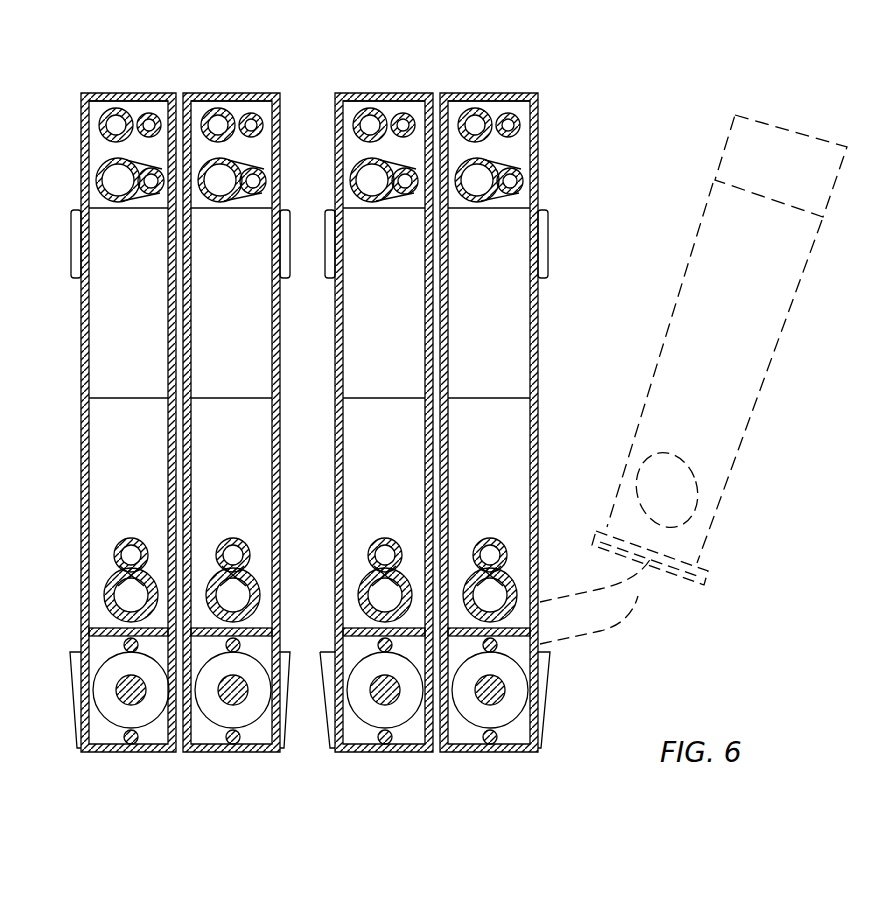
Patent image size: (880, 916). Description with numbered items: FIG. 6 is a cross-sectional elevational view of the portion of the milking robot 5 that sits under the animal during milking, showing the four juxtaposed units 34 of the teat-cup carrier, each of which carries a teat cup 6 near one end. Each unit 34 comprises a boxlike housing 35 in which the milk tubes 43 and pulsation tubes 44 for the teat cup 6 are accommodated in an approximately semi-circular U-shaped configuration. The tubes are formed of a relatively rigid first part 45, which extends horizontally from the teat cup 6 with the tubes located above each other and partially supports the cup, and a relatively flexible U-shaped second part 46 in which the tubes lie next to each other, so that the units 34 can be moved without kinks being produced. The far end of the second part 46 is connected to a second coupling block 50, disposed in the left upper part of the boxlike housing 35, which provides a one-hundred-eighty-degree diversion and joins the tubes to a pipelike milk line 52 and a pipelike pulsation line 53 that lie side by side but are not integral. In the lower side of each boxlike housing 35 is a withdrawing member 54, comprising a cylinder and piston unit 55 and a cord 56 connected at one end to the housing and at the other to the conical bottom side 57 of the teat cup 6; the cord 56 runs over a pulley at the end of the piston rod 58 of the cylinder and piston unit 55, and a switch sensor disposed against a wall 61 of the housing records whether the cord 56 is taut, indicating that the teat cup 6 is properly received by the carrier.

The milking robot 5 is at (562, 208).
The teat cup 6 is at (72, 264).
The unit 34 is at (108, 88).
The boxlike housing 35 is at (96, 358).
The milk tube 43 is at (108, 597).
The pulsation tube 44 is at (114, 548).
The first part of the tubes 45 is at (134, 537).
The second part of the tubes 46 is at (118, 208).
The second coupling block 50 is at (206, 112).
The pipelike milk line 52 is at (100, 126).
The pipelike pulsation line 53 is at (150, 116).
The withdrawing member 54 is at (98, 692).
The cylinder and piston unit 55 is at (150, 712).
The cord 56 is at (130, 742).
The conical bottom side 57 is at (682, 592).
The piston rod 58 is at (505, 690).
The wall 61 is at (90, 636).